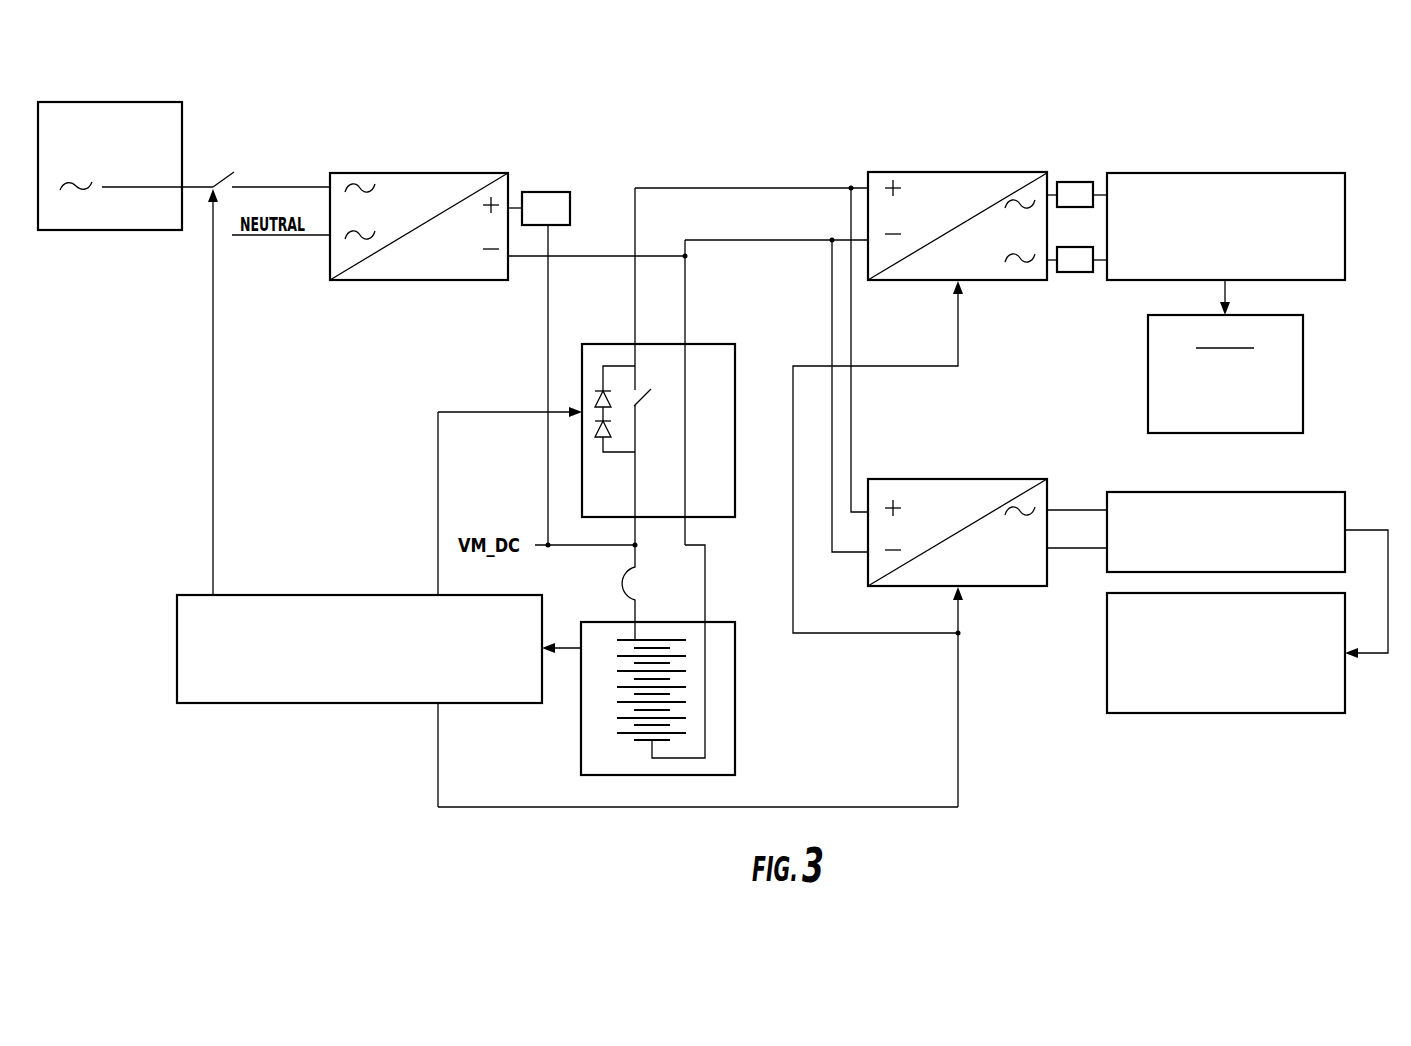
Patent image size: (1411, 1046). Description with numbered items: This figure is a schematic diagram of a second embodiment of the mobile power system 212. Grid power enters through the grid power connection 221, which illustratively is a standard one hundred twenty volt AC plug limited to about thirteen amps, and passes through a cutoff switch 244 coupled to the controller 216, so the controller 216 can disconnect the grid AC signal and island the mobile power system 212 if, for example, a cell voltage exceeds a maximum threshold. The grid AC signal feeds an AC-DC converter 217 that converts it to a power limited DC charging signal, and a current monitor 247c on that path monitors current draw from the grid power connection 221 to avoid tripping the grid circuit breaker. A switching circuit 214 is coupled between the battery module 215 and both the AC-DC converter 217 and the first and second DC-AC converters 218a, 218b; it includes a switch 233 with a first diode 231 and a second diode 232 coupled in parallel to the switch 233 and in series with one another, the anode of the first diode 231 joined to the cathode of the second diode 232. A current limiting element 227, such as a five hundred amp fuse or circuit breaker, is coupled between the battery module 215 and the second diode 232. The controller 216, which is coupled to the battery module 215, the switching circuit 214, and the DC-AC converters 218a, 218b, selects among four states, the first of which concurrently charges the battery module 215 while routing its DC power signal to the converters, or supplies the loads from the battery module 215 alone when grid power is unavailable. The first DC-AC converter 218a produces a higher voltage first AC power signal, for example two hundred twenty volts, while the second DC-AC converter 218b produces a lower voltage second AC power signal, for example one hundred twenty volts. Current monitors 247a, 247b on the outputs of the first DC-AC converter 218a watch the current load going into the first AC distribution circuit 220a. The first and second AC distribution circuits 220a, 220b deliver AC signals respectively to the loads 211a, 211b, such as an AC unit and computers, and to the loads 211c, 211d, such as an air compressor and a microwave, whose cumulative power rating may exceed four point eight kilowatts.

The mobile power system 212 is at (1206, 90).
The grid power connection 221 is at (116, 100).
The cutoff switch 244 is at (244, 173).
The AC-DC converter 217 is at (452, 180).
The current monitor 247c is at (555, 192).
The switching circuit 214 is at (633, 366).
The first diode 231 is at (596, 397).
The second diode 232 is at (596, 427).
The switch 233 is at (651, 393).
The current limiting element 227 is at (616, 590).
The battery module 215 is at (590, 744).
The controller 216 is at (508, 682).
The first DC-AC converter 218a is at (943, 184).
The second DC-AC converter 218b is at (996, 572).
The current monitor 247a is at (1078, 182).
The current monitor 247b is at (1075, 273).
The first AC distribution circuit 220a is at (1346, 190).
The second AC distribution circuit 220b is at (1322, 492).
The load 211a is at (1274, 374).
The load 211b is at (1304, 383).
The load 211c is at (1226, 688).
The load 211d is at (1258, 715).